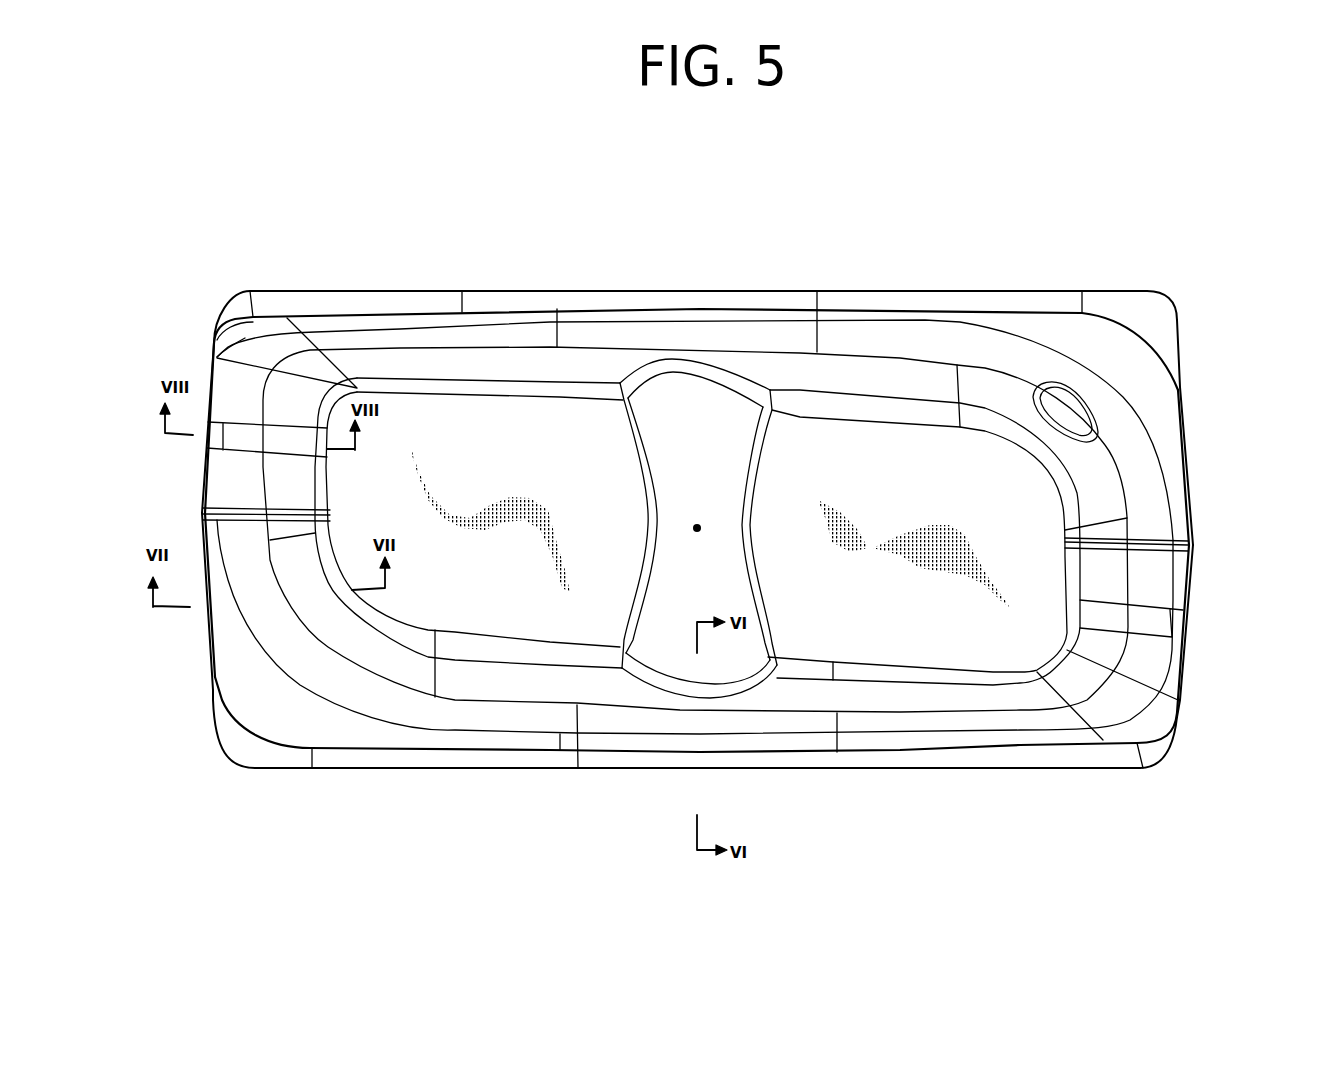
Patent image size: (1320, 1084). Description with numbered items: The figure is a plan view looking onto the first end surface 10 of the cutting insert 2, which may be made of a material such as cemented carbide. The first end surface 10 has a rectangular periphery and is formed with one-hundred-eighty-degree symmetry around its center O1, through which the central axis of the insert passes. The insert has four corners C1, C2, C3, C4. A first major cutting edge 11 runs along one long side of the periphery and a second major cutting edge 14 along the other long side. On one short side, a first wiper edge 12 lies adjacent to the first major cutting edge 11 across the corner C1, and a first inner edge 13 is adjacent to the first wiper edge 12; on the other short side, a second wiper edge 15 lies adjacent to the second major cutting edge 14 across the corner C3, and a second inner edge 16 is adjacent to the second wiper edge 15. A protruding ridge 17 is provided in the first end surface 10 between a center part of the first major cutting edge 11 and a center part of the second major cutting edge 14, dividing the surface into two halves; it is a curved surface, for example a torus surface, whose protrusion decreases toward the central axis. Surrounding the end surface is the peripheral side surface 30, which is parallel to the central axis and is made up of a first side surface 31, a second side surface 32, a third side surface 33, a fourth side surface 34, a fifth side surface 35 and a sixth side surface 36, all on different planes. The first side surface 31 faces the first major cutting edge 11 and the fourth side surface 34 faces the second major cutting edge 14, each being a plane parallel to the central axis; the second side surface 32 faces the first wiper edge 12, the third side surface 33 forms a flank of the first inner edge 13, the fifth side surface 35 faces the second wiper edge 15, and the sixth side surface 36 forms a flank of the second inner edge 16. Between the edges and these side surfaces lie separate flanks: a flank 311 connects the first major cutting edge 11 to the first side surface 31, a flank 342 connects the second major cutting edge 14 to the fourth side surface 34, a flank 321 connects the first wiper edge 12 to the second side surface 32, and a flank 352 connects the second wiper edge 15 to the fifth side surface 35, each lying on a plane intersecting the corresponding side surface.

The cutting insert 2 is at (710, 957).
The first end surface 10 is at (967, 633).
The first major cutting edge 11 is at (883, 753).
The first wiper edge 12 is at (210, 665).
The first inner edge 13 is at (208, 417).
The second major cutting edge 14 is at (650, 307).
The second wiper edge 15 is at (1186, 390).
The second inner edge 16 is at (1192, 580).
The protruding ridge 17 is at (680, 387).
The peripheral side surface 30 is at (900, 772).
The first side surface 31 is at (502, 770).
The flank 311 is at (553, 760).
The second side surface 32 is at (203, 547).
The flank 321 is at (205, 598).
The third side surface 33 is at (212, 360).
The fourth side surface 34 is at (922, 290).
The flank 342 is at (783, 300).
The fifth side surface 35 is at (1195, 507).
The flank 352 is at (1193, 438).
The sixth side surface 36 is at (1183, 680).
The corner C1 is at (232, 763).
The corner C2 is at (228, 300).
The corner C3 is at (1162, 298).
The corner C4 is at (1167, 757).
The center O1 is at (697, 528).